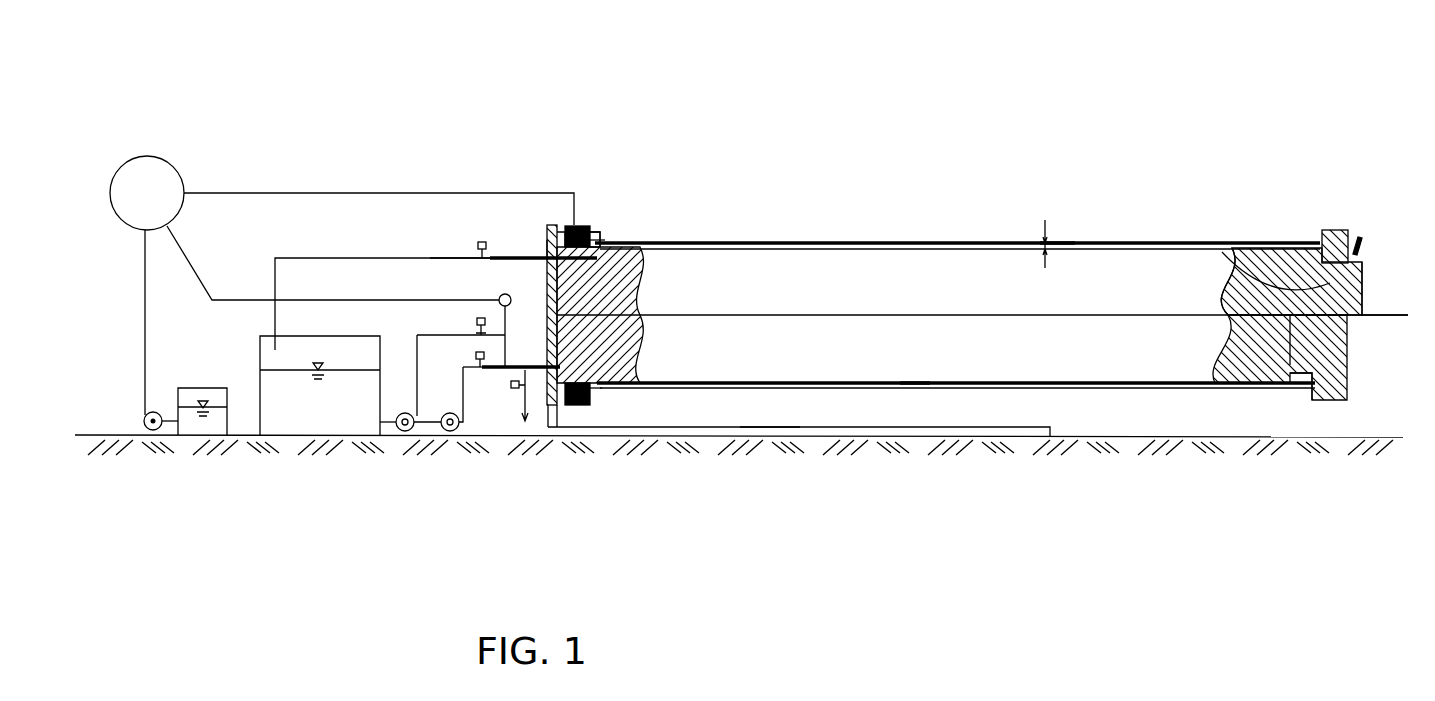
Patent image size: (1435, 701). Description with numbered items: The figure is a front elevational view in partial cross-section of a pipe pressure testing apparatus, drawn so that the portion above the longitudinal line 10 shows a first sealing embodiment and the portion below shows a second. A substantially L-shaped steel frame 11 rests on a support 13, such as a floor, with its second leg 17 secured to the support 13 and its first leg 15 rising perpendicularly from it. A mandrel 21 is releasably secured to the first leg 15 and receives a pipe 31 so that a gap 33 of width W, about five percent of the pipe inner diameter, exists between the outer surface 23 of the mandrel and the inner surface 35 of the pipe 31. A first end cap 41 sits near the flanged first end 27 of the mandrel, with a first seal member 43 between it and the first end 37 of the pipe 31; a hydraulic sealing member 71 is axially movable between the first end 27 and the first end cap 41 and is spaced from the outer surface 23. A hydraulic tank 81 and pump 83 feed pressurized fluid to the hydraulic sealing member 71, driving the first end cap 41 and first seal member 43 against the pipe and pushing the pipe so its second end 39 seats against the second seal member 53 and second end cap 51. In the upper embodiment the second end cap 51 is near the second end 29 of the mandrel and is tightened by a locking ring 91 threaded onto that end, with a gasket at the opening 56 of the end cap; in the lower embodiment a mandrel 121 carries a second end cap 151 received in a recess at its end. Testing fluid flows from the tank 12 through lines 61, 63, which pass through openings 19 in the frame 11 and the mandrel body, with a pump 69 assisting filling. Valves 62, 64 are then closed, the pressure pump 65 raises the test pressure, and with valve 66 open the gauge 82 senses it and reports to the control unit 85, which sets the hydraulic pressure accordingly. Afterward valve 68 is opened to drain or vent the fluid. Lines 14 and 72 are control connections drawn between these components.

The longitudinal line 10 is at (1382, 315).
The frame 11 is at (760, 428).
The tank 12 is at (268, 425).
The support 13 is at (92, 435).
The control line 14 is at (293, 257).
The first leg 15 is at (545, 250).
The second leg 17 is at (1025, 427).
The openings 19 is at (527, 258).
The mandrel 21 is at (715, 280).
The outer surface 23 is at (962, 243).
The first end 27 is at (570, 405).
The second end 29 is at (1361, 278).
The pipe 31 is at (898, 242).
The gap 33 is at (1057, 243).
The inner surface 35 is at (922, 382).
The first end 37 is at (593, 396).
The second end 39 is at (1310, 400).
The first end cap 41 is at (583, 225).
The first seal member 43 is at (592, 235).
The second end cap 51 is at (1335, 231).
The second seal member 53 is at (1323, 240).
The opening 56 is at (1217, 246).
The testing line 61 is at (481, 243).
The valve 62 is at (470, 257).
The line 63 is at (535, 370).
The valve 64 is at (480, 362).
The pressure pump 65 is at (401, 431).
The valve 66 is at (479, 320).
The valve 68 is at (517, 388).
The pump 69 is at (449, 431).
The hydraulic sealing member 71 is at (568, 224).
The control line 72 is at (218, 193).
The hydraulic tank 81 is at (191, 428).
The gauge 82 is at (501, 296).
The pump 83 is at (150, 426).
The control unit 85 is at (127, 178).
The locking ring 91 is at (1362, 258).
The mandrel 121 is at (913, 366).
The second end cap 151 is at (1300, 396).